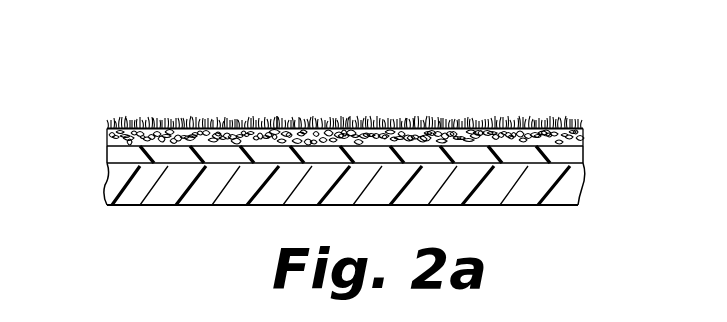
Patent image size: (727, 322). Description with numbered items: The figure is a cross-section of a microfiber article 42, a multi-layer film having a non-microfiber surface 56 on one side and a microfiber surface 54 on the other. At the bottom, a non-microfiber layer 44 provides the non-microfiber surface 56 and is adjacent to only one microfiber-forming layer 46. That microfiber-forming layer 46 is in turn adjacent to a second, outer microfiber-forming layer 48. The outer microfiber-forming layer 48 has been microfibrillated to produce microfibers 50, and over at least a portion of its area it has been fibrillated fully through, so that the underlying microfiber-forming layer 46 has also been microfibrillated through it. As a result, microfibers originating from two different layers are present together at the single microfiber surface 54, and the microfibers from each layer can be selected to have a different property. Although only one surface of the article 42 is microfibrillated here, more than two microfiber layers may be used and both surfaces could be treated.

The microfiber article 42 is at (556, 86).
The non-microfiber layer 44 is at (122, 188).
The microfiber-forming layer 46 is at (117, 155).
The microfiber-forming layer 48 is at (105, 131).
The microfibers 50 is at (285, 118).
The microfiber surface 54 is at (444, 104).
The non-microfiber surface 56 is at (180, 206).